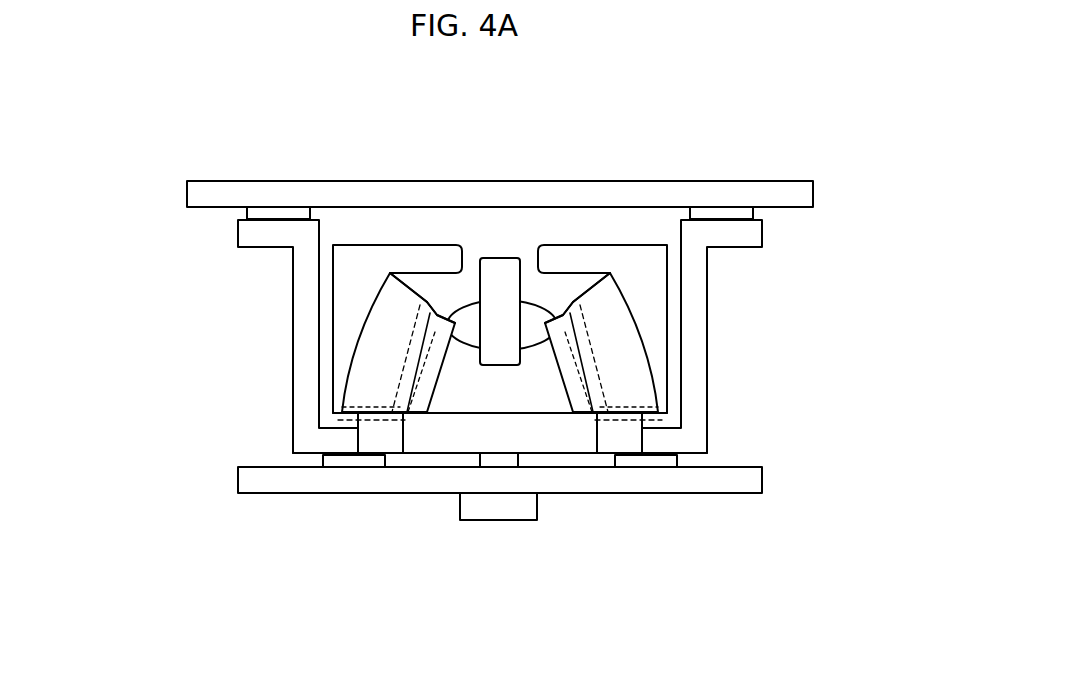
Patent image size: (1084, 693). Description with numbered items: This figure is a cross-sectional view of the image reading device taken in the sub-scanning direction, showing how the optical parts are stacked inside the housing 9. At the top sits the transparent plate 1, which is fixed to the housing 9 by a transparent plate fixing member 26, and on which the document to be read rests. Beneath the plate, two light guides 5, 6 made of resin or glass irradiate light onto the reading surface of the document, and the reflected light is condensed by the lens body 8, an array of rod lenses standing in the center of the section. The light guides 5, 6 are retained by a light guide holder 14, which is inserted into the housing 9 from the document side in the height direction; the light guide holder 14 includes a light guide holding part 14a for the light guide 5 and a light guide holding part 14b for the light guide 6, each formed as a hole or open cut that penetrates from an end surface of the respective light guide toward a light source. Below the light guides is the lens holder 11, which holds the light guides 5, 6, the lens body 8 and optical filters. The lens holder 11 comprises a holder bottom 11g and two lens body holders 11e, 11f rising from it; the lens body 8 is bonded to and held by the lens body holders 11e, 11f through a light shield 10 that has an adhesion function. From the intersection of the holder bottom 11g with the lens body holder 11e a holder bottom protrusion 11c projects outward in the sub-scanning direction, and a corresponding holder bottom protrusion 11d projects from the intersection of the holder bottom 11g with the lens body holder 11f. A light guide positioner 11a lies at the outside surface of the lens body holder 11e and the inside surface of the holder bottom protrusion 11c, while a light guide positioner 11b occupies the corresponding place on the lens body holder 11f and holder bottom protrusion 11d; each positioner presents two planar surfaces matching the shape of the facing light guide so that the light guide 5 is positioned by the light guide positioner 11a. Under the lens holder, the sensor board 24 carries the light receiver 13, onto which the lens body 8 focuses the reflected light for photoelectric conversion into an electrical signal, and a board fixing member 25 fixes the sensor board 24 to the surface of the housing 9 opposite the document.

The transparent plate 1 is at (777, 195).
The light guide 5 is at (627, 383).
The light guide 6 is at (363, 377).
The lens body 8 is at (502, 288).
The housing 9 is at (307, 333).
The light shield 10 is at (468, 320).
The lens holder 11 is at (532, 438).
The light guide positioner 11a is at (412, 400).
The light guide positioner 11b is at (593, 418).
The holder bottom protrusion 11c is at (368, 443).
The holder bottom protrusion 11d is at (667, 458).
The lens body holder 11e is at (417, 293).
The lens body holder 11f is at (583, 293).
The holder bottom 11g is at (463, 437).
The light receiver 13 is at (498, 463).
The light guide holder 14 is at (370, 267).
The light guide holding part 14a is at (363, 313).
The light guide holding part 14b is at (637, 320).
The sensor board 24 is at (753, 477).
The board fixing member 25 is at (340, 455).
The transparent plate fixing member 26 is at (273, 217).